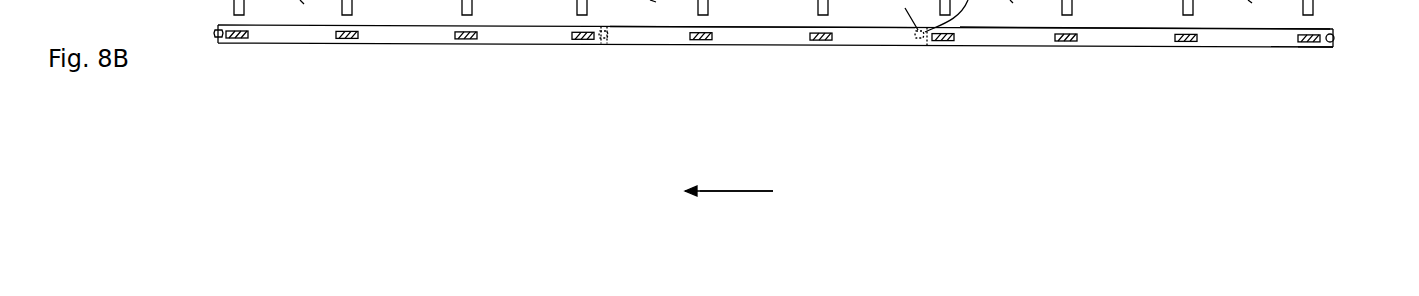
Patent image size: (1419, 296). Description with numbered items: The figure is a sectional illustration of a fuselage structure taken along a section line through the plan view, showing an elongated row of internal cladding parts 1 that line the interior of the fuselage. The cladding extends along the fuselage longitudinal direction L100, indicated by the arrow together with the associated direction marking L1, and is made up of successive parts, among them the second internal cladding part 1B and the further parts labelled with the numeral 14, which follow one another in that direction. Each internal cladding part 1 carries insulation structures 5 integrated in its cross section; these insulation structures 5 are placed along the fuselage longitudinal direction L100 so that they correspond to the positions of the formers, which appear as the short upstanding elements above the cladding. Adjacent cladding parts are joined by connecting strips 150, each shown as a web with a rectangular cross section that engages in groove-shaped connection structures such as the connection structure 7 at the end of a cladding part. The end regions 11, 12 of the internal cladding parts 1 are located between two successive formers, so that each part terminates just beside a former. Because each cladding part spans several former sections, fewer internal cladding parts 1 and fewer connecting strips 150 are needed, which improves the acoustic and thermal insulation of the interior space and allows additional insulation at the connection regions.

The internal cladding part 1 is at (293, 43).
The luminaire module 14 is at (1128, 47).
The second internal cladding part 1B is at (758, 45).
The insulation structure 5 is at (237, 41).
The connecting strip 150 is at (213, 33).
The end region 11 is at (928, 45).
The end region 12 is at (1320, 48).
The connection structure 7 is at (1333, 32).
The length of luminaire L1 is at (733, 191).
The fuselage longitudinal direction L100 is at (729, 207).